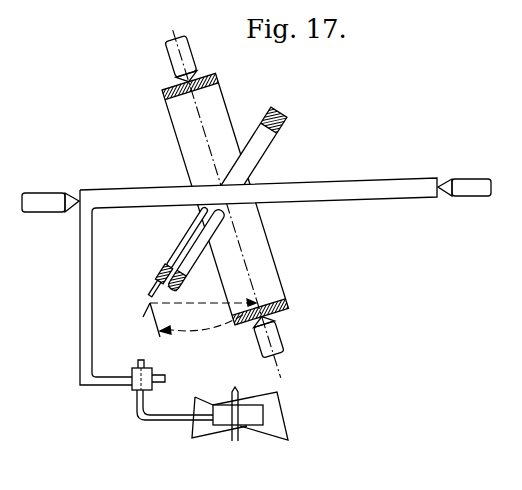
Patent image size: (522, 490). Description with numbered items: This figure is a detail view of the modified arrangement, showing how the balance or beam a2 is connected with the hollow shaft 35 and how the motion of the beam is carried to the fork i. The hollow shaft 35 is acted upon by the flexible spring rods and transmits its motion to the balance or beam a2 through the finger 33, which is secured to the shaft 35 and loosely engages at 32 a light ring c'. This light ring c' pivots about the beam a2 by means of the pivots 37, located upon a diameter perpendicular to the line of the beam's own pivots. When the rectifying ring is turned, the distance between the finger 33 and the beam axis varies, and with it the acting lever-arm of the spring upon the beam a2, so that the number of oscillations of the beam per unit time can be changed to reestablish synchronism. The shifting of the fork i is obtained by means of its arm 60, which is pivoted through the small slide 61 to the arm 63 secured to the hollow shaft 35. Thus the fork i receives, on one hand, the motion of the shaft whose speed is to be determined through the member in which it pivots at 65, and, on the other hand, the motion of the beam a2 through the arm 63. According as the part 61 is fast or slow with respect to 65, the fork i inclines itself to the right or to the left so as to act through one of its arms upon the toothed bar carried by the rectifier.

The pivots 37 is at (186, 58).
The hollow shaft 35 is at (352, 184).
The balance or beam a2 is at (225, 199).
The light ring c' is at (251, 155).
The engagement point 32 is at (166, 270).
The finger 33 is at (159, 291).
The arm 63 is at (89, 287).
The small slide 61 is at (136, 391).
The arm 60 is at (175, 417).
The fork i is at (276, 415).
The pivot 65 is at (232, 437).